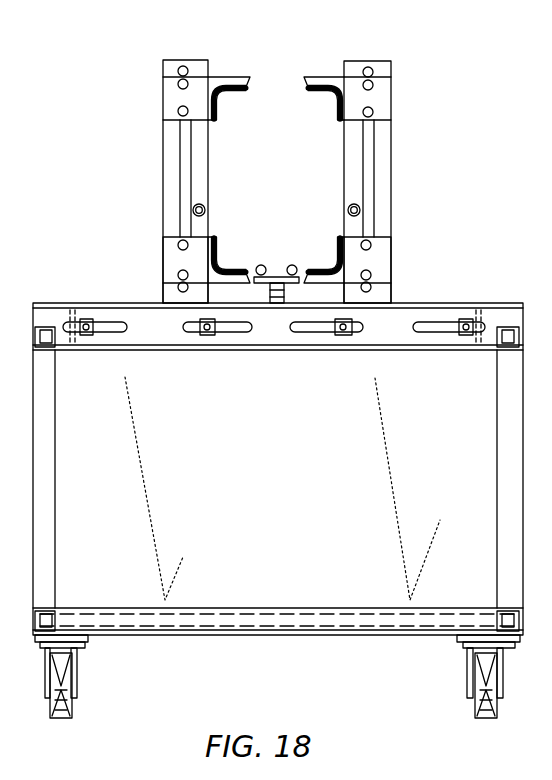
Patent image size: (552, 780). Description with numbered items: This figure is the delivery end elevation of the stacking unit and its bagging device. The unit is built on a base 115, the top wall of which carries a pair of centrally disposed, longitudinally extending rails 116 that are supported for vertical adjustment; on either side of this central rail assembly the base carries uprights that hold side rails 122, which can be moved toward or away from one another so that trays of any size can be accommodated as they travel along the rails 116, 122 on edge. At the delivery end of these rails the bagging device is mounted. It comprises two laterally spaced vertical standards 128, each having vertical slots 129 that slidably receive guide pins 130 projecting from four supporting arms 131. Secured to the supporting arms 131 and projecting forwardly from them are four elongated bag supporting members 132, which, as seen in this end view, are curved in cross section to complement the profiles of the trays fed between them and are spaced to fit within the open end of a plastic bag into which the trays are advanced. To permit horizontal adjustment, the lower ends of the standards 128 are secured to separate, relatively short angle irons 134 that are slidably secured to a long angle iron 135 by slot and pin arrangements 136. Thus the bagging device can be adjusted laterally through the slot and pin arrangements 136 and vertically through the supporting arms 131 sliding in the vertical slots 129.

The base 115 is at (358, 475).
The rails 116 is at (290, 265).
The side rails 122 is at (206, 210).
The vertical standards 128 is at (192, 60).
The vertical slots 129 is at (185, 178).
The guide pins 130 is at (178, 112).
The supporting arms 131 is at (218, 82).
The bag supporting members 132 is at (216, 114).
The short angle irons 134 is at (78, 342).
The long angle iron 135 is at (272, 340).
The slot and pin arrangements 136 is at (88, 318).